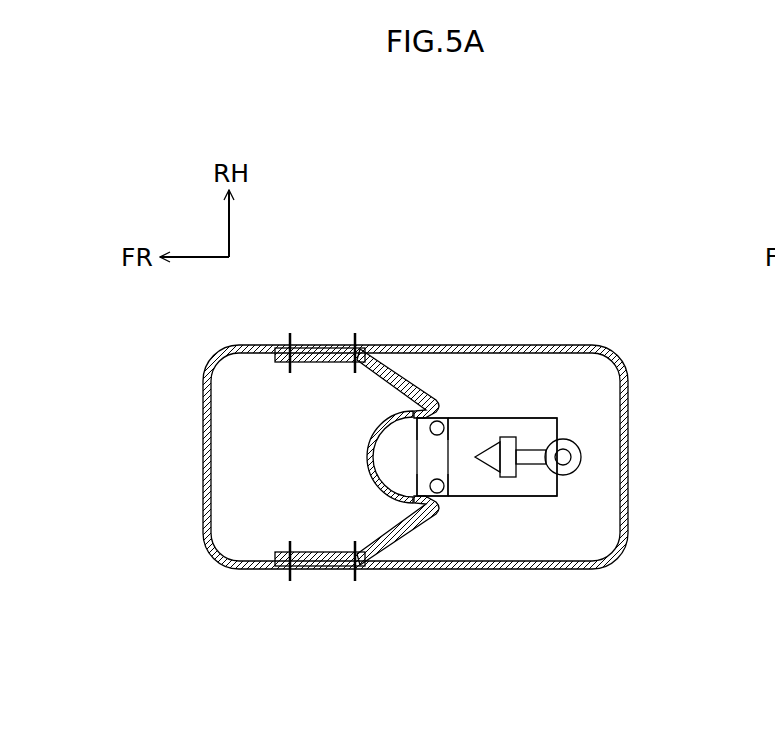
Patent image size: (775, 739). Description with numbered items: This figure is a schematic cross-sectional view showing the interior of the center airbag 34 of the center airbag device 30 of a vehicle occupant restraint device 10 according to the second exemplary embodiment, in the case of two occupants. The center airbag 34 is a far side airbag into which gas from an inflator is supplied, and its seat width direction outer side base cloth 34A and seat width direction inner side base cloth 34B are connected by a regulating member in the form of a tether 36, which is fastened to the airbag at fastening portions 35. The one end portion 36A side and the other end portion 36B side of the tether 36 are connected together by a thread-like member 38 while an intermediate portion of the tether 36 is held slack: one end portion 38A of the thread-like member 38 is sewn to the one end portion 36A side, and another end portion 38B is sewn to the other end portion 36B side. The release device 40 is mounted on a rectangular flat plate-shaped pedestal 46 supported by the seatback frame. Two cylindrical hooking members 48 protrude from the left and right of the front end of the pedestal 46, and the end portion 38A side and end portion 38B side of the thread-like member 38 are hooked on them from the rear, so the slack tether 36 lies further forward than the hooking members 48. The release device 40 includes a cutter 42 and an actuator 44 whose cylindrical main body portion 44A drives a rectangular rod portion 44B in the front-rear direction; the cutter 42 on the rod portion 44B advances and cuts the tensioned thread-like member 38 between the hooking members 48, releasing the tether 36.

The vehicle seat 10 is at (372, 305).
The center airbag device 30 is at (322, 608).
The center airbag 34 is at (583, 342).
The seat width direction outer side base cloth 34A is at (388, 343).
The seat width direction inner side base cloth 34B is at (390, 570).
The fastening portions 35 is at (290, 338).
The tether 36 is at (363, 472).
The one end portion of tether 36A is at (312, 362).
The other end portion of tether 36B is at (313, 555).
The thread-like member 38 is at (452, 453).
The one end portion of thread-like member 38A is at (432, 414).
The other end portion of thread-like member 38B is at (447, 498).
The release device 40 is at (593, 438).
The cutter 42 is at (478, 470).
The actuator 44 is at (585, 428).
The main body portion 44A is at (580, 482).
The rod portion 44B is at (528, 468).
The pedestal 46 is at (520, 418).
The hooking members 48 is at (430, 425).